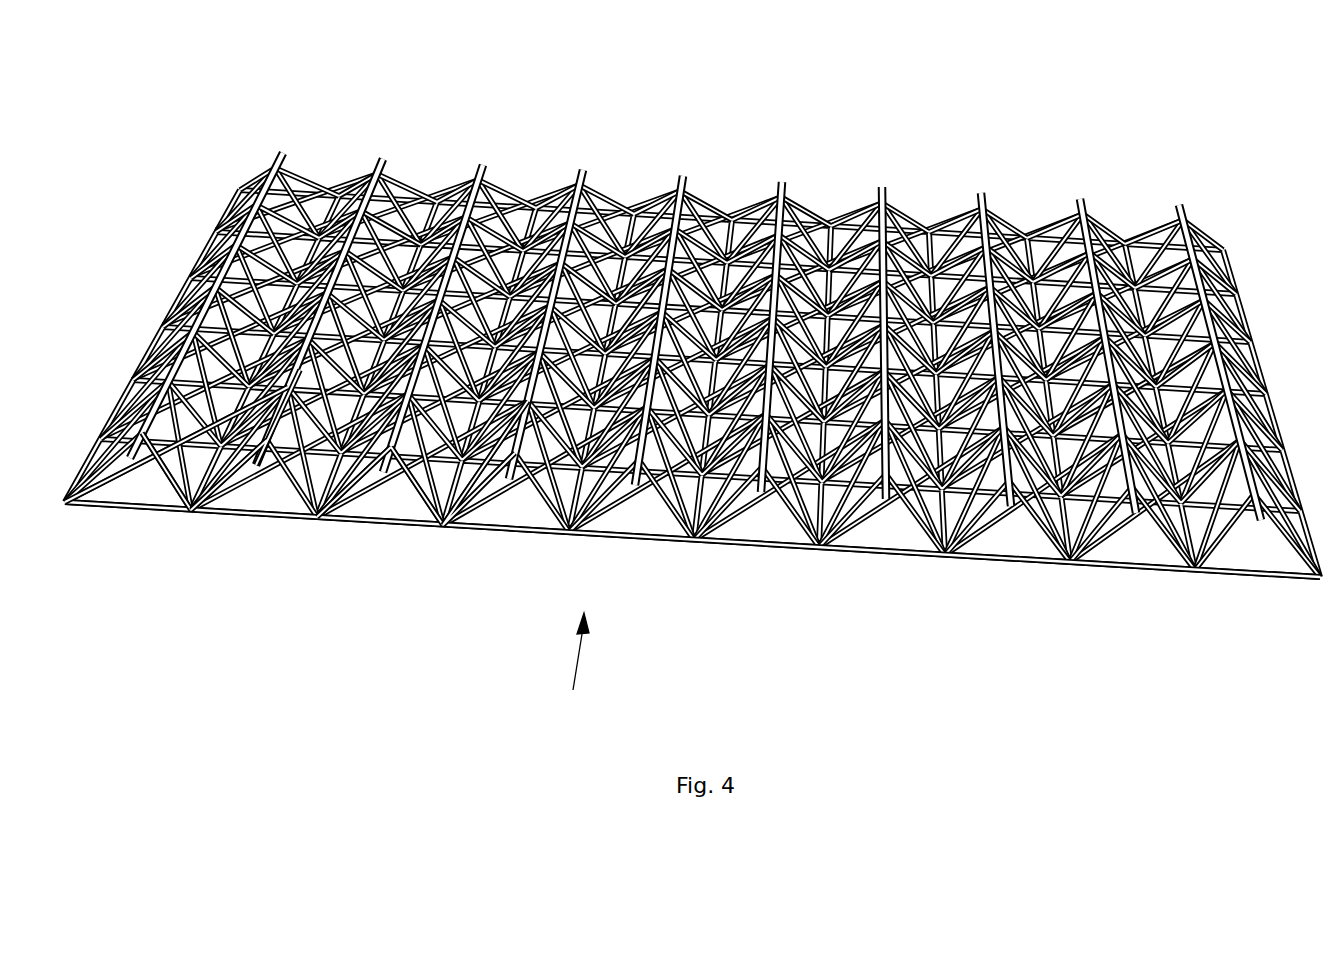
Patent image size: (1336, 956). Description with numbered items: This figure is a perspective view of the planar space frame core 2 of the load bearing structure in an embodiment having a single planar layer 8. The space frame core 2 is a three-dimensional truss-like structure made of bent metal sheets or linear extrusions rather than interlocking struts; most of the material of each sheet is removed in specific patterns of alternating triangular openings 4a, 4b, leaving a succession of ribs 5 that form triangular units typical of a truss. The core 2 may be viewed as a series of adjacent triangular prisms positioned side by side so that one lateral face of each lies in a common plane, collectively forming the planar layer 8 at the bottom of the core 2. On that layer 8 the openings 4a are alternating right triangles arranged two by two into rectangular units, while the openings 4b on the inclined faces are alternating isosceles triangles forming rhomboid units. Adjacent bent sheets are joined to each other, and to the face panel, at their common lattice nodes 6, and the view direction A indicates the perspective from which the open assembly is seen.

The planar space frame core 2 is at (687, 147).
The triangular openings (right triangles) 4a is at (140, 490).
The triangular openings (isosceles triangles) 4b is at (187, 473).
The ribs 5 is at (457, 497).
The lattice nodes 6 is at (263, 462).
The planar layer 8 is at (737, 547).
The viewing direction A is at (568, 658).